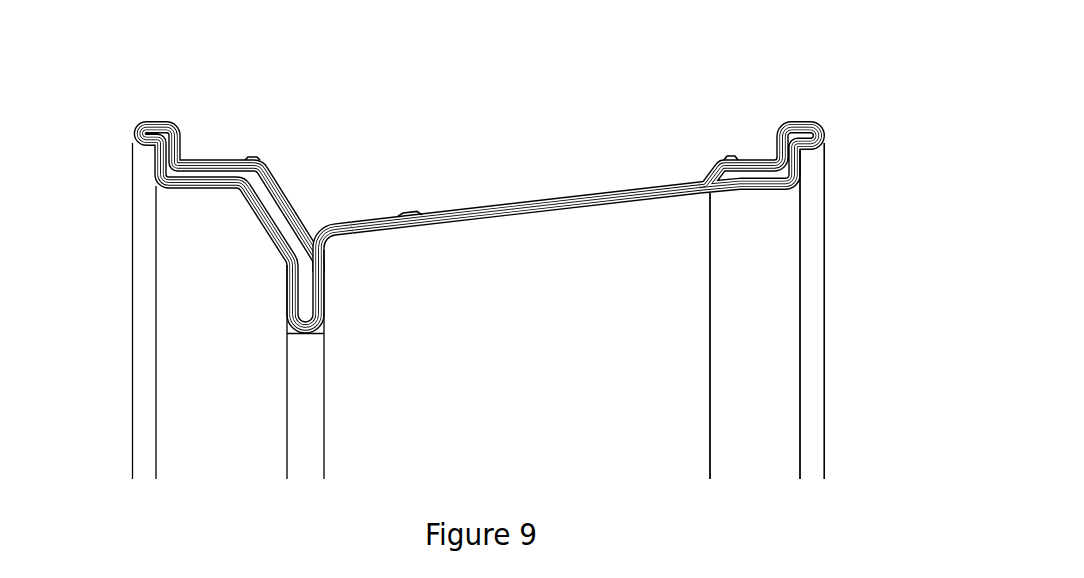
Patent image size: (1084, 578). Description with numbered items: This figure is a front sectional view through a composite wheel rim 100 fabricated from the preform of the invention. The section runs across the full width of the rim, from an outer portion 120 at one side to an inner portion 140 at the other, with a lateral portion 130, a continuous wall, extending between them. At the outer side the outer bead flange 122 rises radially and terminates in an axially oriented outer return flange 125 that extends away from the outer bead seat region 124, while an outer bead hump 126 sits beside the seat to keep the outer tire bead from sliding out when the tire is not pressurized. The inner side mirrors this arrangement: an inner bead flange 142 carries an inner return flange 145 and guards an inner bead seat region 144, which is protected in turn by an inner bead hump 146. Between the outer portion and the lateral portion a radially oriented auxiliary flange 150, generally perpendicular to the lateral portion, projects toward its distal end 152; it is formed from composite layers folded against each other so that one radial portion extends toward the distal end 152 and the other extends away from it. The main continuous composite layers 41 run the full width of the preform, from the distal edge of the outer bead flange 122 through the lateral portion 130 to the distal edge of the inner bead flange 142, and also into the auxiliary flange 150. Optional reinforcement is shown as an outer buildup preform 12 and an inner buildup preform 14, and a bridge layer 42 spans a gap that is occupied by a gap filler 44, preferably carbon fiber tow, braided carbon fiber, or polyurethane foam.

The wheel rim 100 is at (828, 74).
The outer buildup preform 12 is at (179, 260).
The inner buildup preform 14 is at (797, 128).
The continuous composite layers 41 is at (171, 236).
The bridge layer 42 is at (526, 160).
The gap filler 44 is at (358, 166).
The outer portion 120 is at (148, 114).
The outer bead flange 122 is at (183, 143).
The outer bead seat region 124 is at (265, 162).
The outer return flange 125 is at (85, 155).
The outer bead hump 126 is at (291, 129).
The lateral portion 130 is at (525, 315).
The inner portion 140 is at (828, 197).
The inner bead flange 142 is at (773, 148).
The inner bead seat region 144 is at (680, 106).
The inner return flange 145 is at (856, 121).
The inner bead hump 146 is at (660, 127).
The auxiliary flange 150 is at (285, 297).
The distal end of the auxiliary flange 152 is at (302, 335).